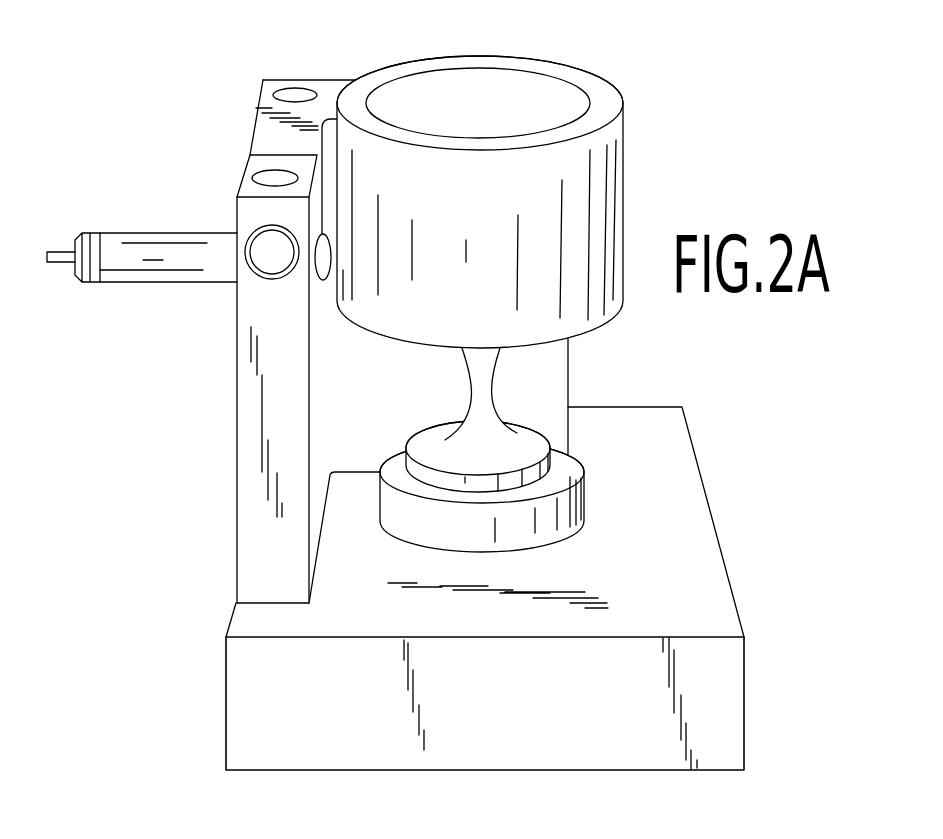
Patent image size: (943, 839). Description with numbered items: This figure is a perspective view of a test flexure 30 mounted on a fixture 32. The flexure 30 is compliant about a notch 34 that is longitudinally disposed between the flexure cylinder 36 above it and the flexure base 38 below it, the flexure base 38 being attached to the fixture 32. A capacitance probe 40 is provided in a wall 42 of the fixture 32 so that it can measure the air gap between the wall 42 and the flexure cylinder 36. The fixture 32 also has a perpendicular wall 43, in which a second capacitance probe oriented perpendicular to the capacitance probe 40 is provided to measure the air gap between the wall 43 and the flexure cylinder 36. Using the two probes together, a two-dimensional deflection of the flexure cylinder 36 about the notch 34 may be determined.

The test flexure 30 is at (404, 389).
The fixture 32 is at (695, 583).
The notch 34 is at (492, 390).
The flexure cylinder 36 is at (608, 202).
The flexure base 38 is at (567, 505).
The capacitance probe 40 is at (132, 265).
The wall 42 is at (235, 417).
The perpendicular wall 43 is at (570, 353).